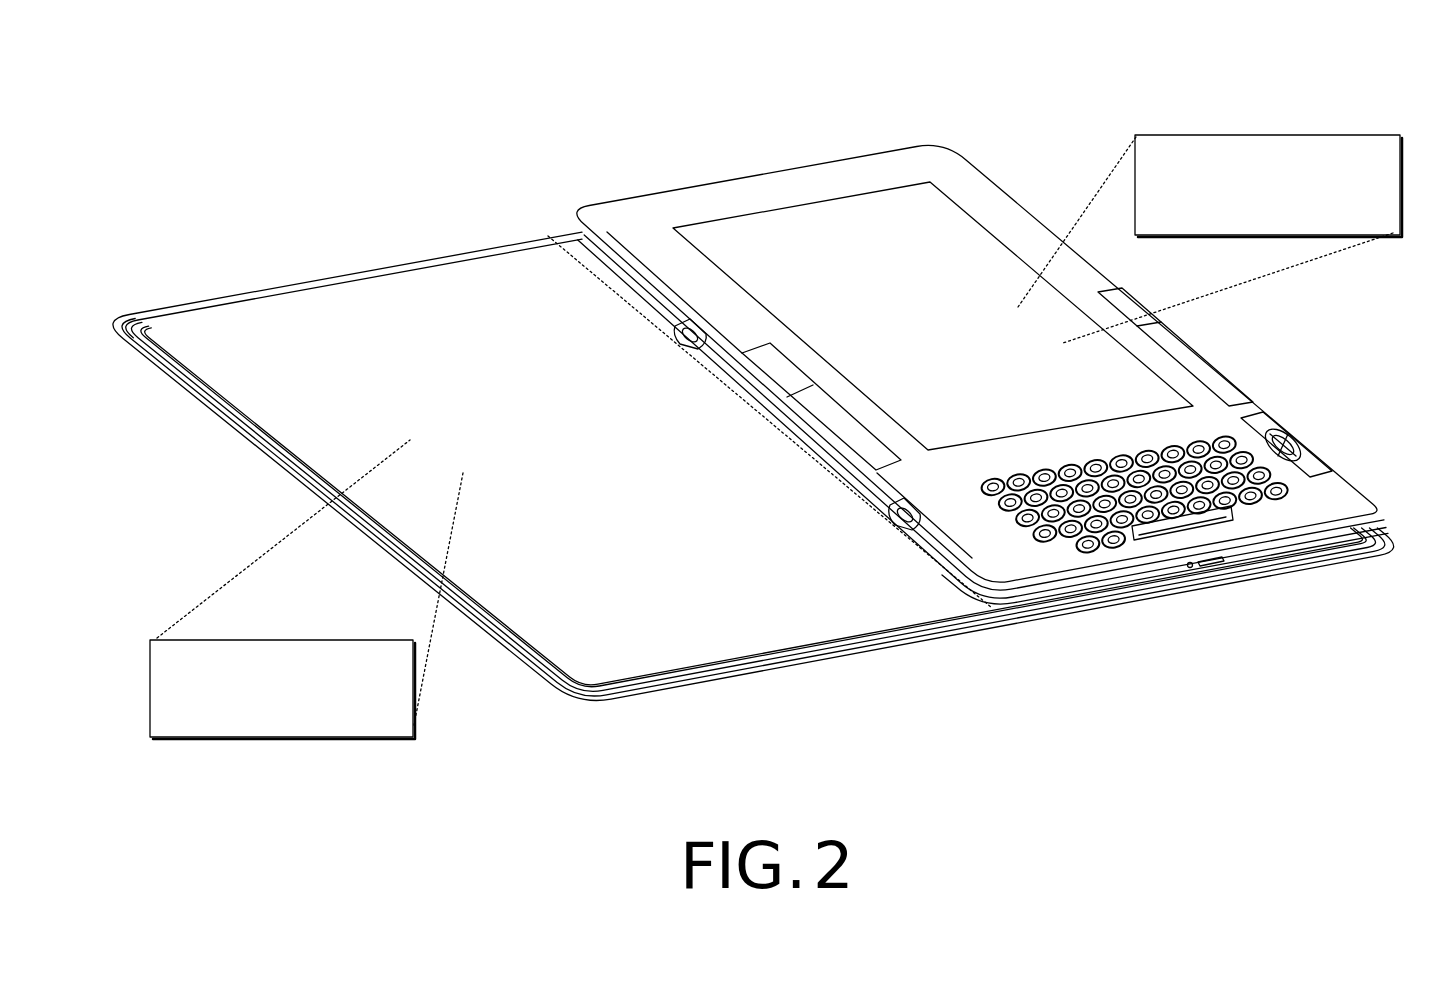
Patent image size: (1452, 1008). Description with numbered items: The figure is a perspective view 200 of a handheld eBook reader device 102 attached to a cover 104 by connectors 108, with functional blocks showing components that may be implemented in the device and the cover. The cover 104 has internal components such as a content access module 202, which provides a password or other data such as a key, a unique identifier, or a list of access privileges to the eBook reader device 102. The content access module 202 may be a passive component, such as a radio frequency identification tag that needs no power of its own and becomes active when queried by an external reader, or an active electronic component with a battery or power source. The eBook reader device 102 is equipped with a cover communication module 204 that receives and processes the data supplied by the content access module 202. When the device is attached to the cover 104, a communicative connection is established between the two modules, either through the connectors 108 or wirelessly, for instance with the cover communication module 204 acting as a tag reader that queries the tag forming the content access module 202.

The perspective view 200 is at (1322, 78).
The eBook reader device 102 is at (962, 157).
The cover 104 is at (364, 306).
The connectors 108 is at (663, 320).
The content access module 202 is at (265, 709).
The cover communication module 204 is at (1251, 219).